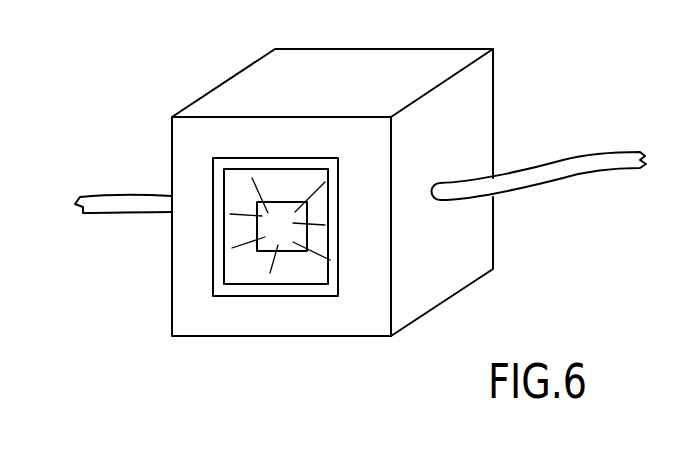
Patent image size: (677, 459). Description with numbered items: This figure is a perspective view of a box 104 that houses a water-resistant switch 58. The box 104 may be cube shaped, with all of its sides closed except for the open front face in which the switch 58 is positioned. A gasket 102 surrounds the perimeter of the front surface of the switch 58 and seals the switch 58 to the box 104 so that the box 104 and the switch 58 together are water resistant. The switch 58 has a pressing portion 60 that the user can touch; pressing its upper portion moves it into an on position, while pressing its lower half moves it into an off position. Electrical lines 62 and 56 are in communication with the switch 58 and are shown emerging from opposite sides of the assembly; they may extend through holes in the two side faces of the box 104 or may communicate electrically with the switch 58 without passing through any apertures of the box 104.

The electrical line 56 is at (120, 207).
The switch 58 is at (285, 250).
The pressing portion 60 is at (282, 218).
The electrical line 62 is at (591, 161).
The gasket 102 is at (343, 291).
The box 104 is at (187, 142).